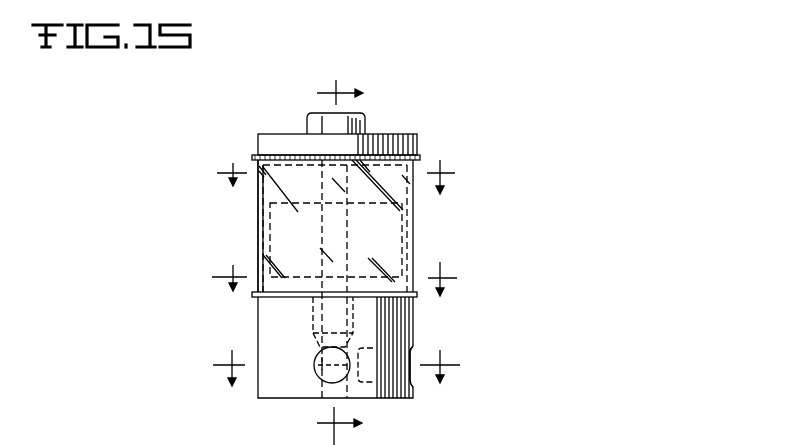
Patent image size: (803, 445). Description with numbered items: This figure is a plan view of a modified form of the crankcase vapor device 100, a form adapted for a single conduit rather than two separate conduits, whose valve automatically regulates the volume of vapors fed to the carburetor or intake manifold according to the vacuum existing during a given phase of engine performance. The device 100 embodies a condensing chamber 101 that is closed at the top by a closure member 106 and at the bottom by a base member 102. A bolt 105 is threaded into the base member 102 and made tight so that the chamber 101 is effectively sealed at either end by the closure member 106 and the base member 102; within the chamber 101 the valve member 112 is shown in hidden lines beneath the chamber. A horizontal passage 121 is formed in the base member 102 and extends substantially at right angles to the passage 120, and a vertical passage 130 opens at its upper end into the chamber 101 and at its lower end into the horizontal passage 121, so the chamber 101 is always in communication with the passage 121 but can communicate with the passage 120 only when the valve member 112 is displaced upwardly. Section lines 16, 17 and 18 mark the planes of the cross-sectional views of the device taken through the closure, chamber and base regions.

The section line 16- 16 is at (321, 257).
The section line 17- 17 is at (337, 273).
The section line 18- 18 is at (337, 279).
The device 100 is at (422, 223).
The chamber 101 is at (258, 194).
The base member 102 is at (275, 313).
The bolt 105 is at (310, 219).
The closure member 106 is at (413, 143).
The valve member 112 is at (313, 325).
The passage 120 is at (410, 352).
The horizontal passage 121 is at (318, 366).
The vertical passage 130 is at (388, 324).